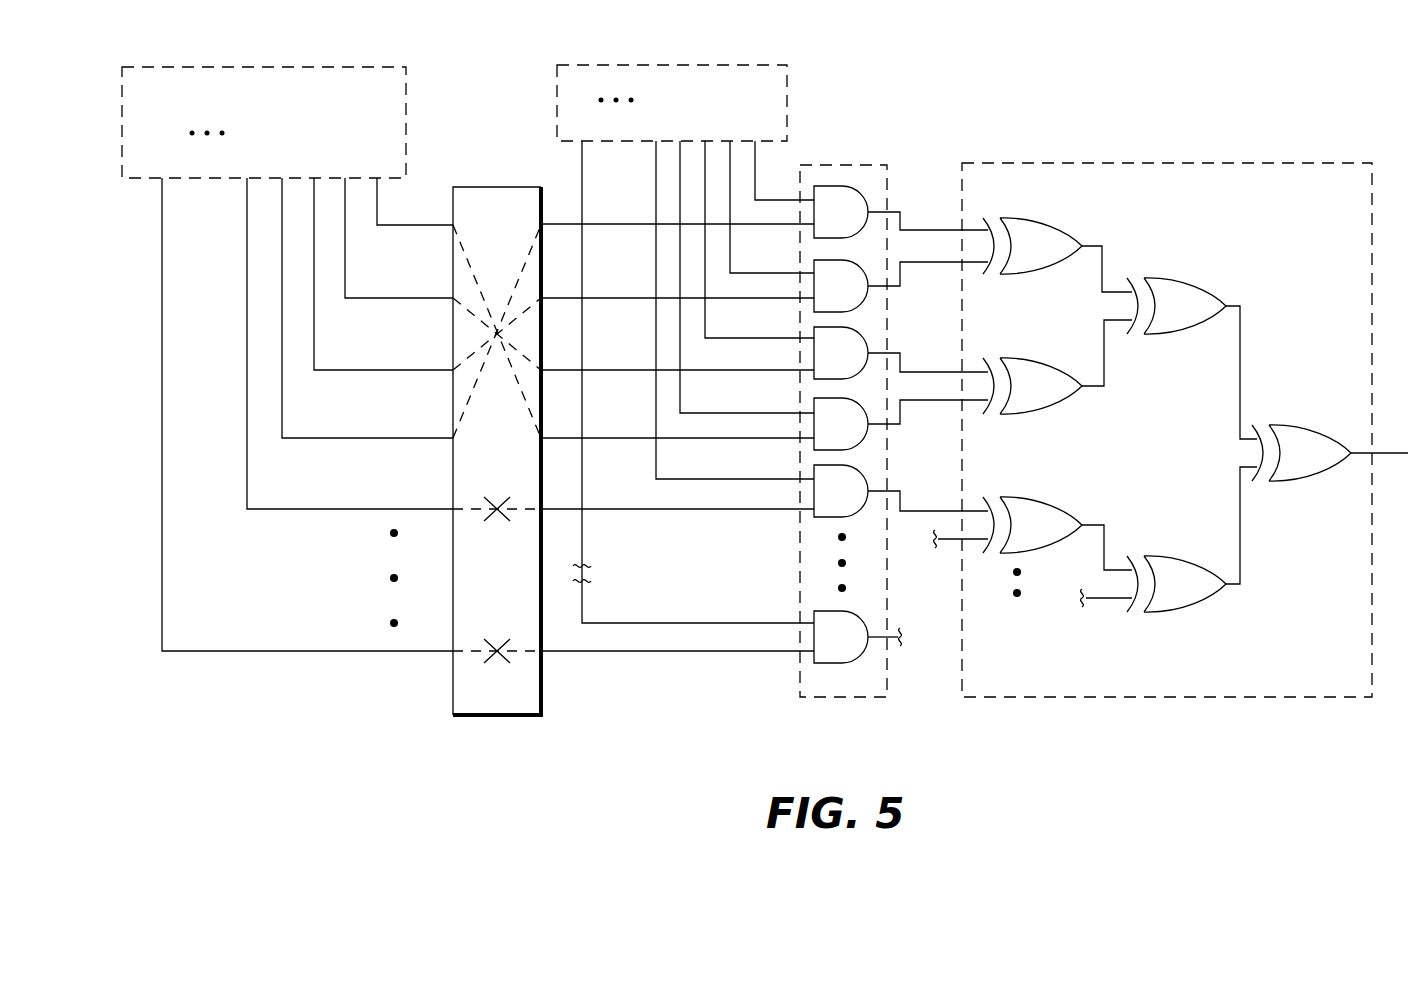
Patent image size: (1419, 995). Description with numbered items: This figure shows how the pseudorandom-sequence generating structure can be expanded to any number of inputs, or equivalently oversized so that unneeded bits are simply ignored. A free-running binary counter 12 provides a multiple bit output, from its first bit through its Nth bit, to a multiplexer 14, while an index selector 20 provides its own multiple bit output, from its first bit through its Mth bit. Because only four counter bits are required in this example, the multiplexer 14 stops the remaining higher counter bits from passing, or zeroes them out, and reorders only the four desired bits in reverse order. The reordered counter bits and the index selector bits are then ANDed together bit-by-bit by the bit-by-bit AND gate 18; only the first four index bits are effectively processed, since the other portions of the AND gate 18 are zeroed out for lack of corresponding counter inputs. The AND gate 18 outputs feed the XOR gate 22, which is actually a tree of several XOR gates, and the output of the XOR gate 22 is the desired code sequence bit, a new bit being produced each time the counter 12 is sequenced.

The bit position counter 12 is at (340, 67).
The multiplexer 14 is at (503, 716).
The bit-by-bit AND gate 18 is at (887, 170).
The index selector 20 is at (787, 73).
The XOR gate 22 is at (1158, 165).